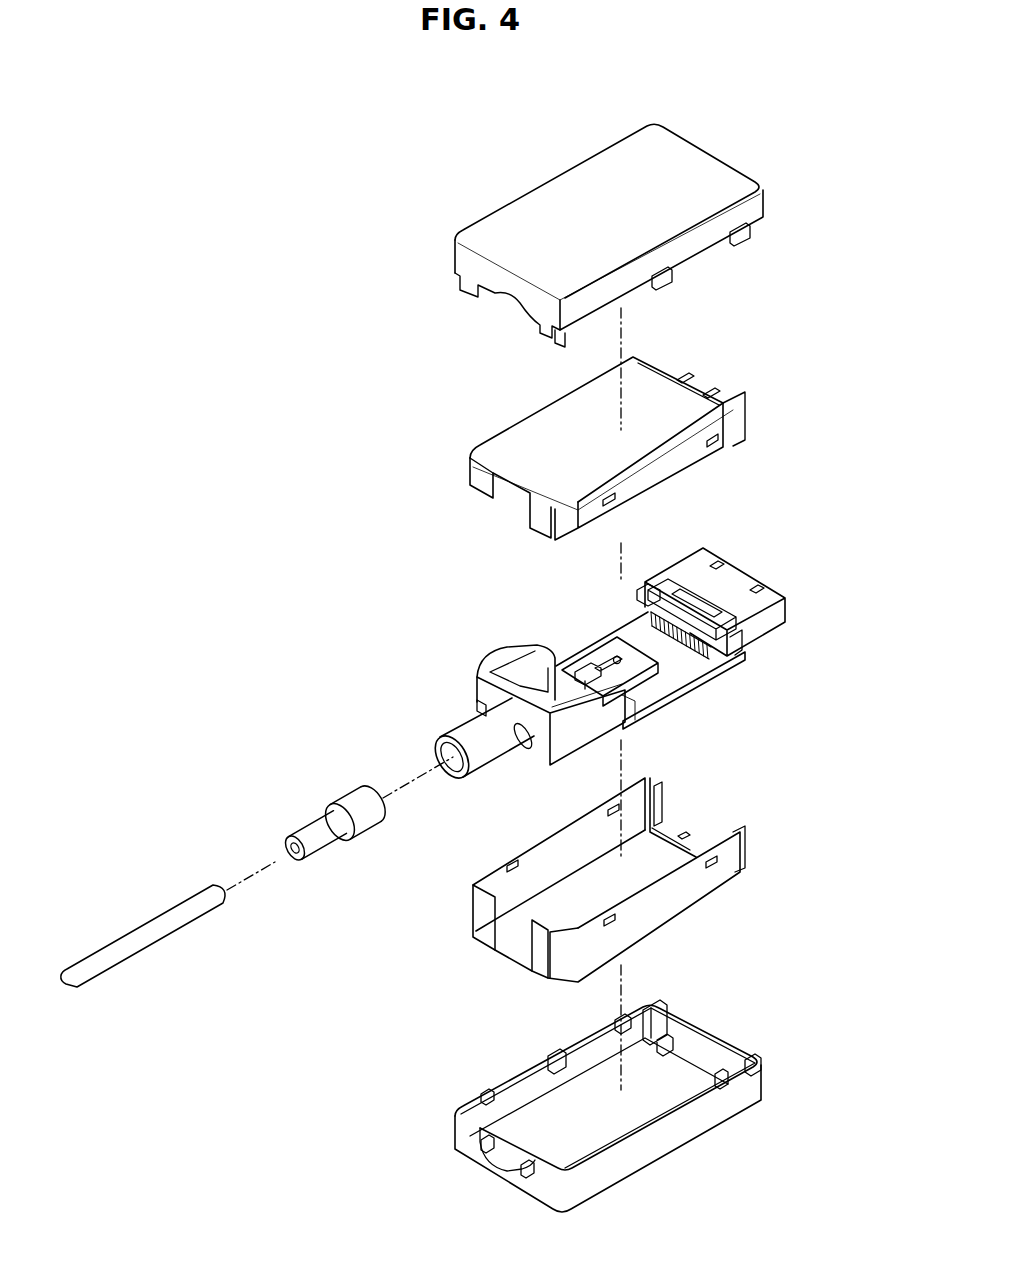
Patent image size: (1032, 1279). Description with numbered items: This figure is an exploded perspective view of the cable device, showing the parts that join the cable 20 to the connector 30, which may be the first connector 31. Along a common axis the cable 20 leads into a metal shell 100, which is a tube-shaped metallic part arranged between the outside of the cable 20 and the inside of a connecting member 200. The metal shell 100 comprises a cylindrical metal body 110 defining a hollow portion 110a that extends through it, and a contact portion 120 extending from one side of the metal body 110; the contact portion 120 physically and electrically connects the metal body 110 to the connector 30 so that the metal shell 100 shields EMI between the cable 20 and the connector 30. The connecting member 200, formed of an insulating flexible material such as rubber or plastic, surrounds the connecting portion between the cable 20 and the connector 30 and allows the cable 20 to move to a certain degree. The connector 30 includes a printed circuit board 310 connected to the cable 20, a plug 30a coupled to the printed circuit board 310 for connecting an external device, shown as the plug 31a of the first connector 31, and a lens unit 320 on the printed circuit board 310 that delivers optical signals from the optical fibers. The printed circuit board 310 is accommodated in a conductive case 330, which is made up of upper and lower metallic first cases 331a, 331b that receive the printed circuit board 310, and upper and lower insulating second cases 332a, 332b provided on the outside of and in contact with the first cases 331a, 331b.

The cable 20 is at (137, 922).
The metal shell 100 is at (290, 788).
The metal body 110 is at (323, 843).
The hollow portion 110a is at (287, 845).
The contact portion 120 is at (373, 818).
The connecting member 200 is at (463, 728).
The connector 30 is at (728, 693).
The first connector 31 is at (670, 612).
The plug 30a is at (711, 572).
The plug 31a is at (735, 577).
The printed circuit board 310 is at (600, 632).
The lens unit 320 is at (633, 669).
The case 330 is at (671, 650).
The first case 331a is at (509, 442).
The first case 331b is at (716, 885).
The second case 332a is at (559, 184).
The second case 332b is at (742, 1102).